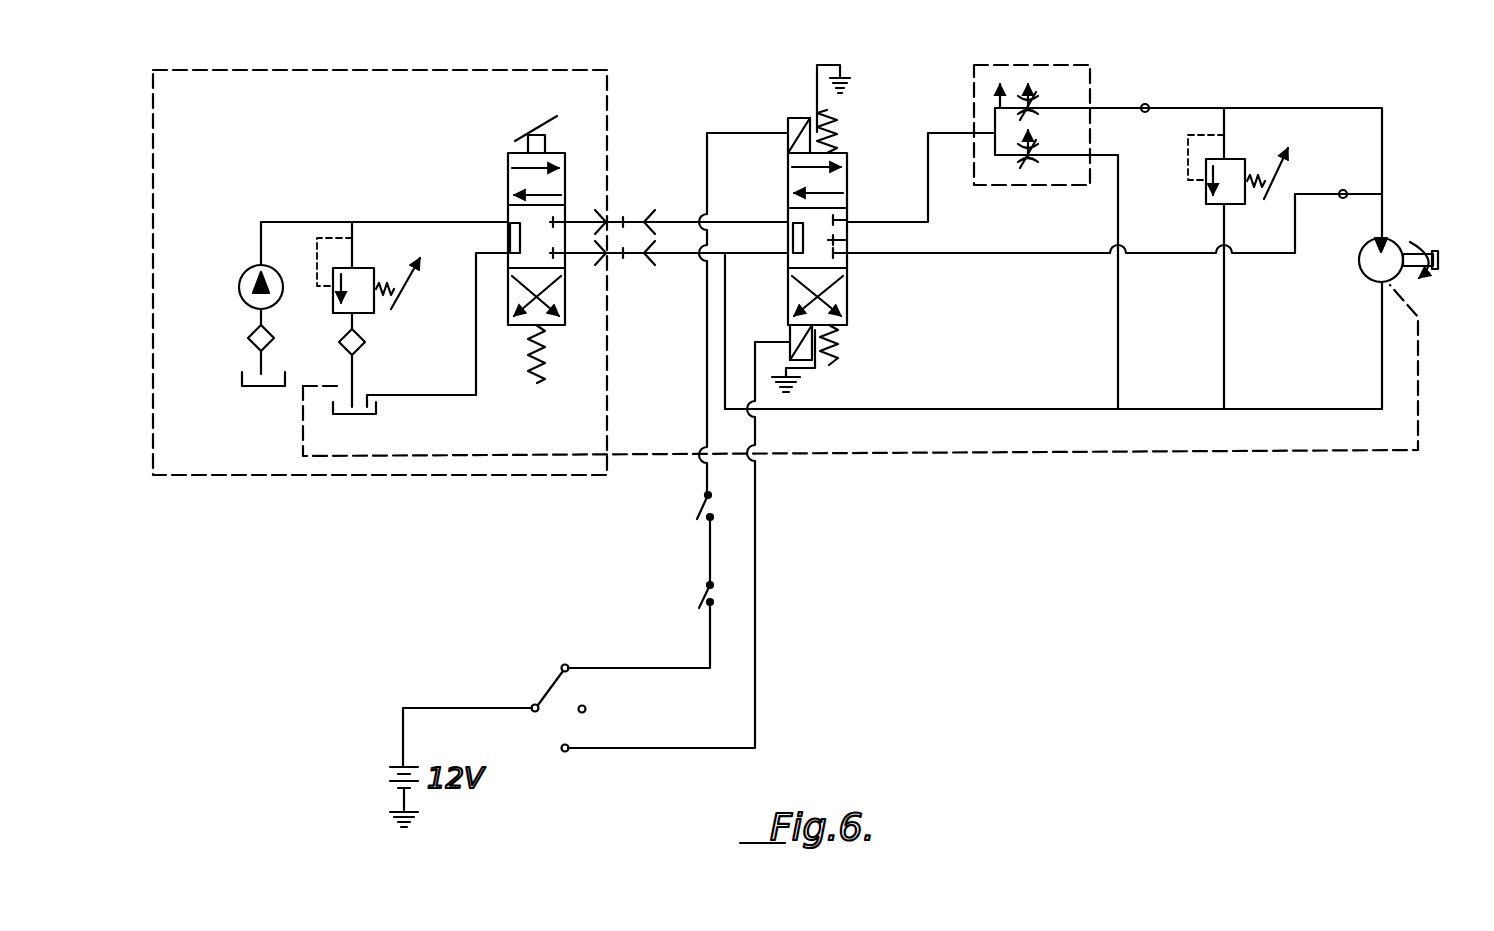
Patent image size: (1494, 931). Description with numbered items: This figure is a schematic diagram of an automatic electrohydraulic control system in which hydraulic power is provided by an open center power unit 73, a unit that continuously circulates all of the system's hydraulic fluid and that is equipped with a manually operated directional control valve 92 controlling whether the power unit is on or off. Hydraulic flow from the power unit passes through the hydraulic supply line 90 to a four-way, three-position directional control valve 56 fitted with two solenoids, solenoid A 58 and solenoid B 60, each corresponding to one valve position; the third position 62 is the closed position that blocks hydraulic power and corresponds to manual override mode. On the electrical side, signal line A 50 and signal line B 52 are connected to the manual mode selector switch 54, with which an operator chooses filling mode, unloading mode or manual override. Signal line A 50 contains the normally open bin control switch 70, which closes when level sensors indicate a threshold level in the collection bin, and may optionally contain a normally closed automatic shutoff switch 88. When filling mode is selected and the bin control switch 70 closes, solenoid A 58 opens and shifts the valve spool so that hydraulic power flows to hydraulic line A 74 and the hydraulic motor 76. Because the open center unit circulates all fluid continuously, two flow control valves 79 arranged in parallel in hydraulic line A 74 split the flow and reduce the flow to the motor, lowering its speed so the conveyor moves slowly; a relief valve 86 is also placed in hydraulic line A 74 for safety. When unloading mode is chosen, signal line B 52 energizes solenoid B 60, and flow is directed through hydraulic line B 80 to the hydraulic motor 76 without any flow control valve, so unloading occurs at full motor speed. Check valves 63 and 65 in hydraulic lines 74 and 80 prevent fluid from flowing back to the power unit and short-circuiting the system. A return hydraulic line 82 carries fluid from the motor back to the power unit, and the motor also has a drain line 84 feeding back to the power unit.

The open center power unit 73 is at (496, 65).
The manually operated directional control valve 92 is at (557, 187).
The hydraulic supply line 90 is at (740, 218).
The solenoid A 58 is at (796, 121).
The three-position directional control valve 56 is at (852, 170).
The third position 62 is at (847, 240).
The solenoid B 60 is at (792, 334).
The signal line B 52 is at (757, 663).
The return hydraulic line 82 is at (1322, 409).
The hydraulic line B 80 is at (1052, 254).
The flow control valves 79 is at (1002, 65).
The check valve 63 is at (1157, 84).
The hydraulic line A 74 is at (1201, 107).
The relief valve 86 is at (1205, 190).
The check valve 65 is at (1345, 191).
The hydraulic motor 76 is at (1394, 250).
The drain line 84 is at (1424, 392).
The bin control switch 70 is at (704, 511).
The automatic shutoff switch 88 is at (703, 597).
The signal line A 50 is at (656, 668).
The manual mode selector switch 54 is at (549, 690).